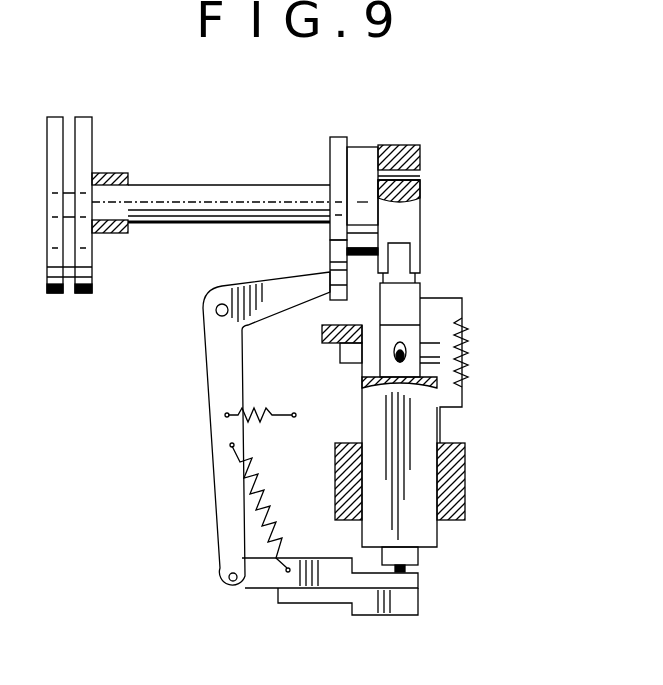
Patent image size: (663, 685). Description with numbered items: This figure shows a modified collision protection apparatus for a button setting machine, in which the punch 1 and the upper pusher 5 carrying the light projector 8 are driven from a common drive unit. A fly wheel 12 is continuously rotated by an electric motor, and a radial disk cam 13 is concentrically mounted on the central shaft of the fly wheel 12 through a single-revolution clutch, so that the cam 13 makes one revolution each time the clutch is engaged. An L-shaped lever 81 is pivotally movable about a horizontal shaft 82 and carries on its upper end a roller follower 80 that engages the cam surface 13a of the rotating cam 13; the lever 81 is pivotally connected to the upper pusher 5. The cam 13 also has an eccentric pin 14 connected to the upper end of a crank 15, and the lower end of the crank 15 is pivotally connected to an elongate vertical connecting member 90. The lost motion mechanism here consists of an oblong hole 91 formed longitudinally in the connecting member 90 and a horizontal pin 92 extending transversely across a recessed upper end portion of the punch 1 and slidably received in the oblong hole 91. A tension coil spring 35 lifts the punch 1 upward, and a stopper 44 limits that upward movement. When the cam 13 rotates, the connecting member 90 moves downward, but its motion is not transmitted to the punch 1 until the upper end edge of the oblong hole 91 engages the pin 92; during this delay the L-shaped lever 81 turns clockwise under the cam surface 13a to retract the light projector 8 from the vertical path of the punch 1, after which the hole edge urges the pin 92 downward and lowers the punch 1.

The punch 1 is at (430, 503).
The upper pusher 5 is at (330, 565).
The light projector 8 is at (370, 606).
The fly wheel 12 is at (85, 136).
The radial disk cam 13 is at (330, 160).
The cam surface 13a is at (342, 140).
The eccentric pin 14 is at (417, 175).
The crank 15 is at (420, 215).
The tension coil spring 35 is at (465, 370).
The stopper 44 is at (325, 344).
The roller follower 80 is at (330, 272).
The L-shaped lever 81 is at (218, 506).
The horizontal shaft 82 is at (215, 309).
The connecting member 90 is at (400, 300).
The oblong hole 91 is at (462, 336).
The horizontal pin 92 is at (406, 352).